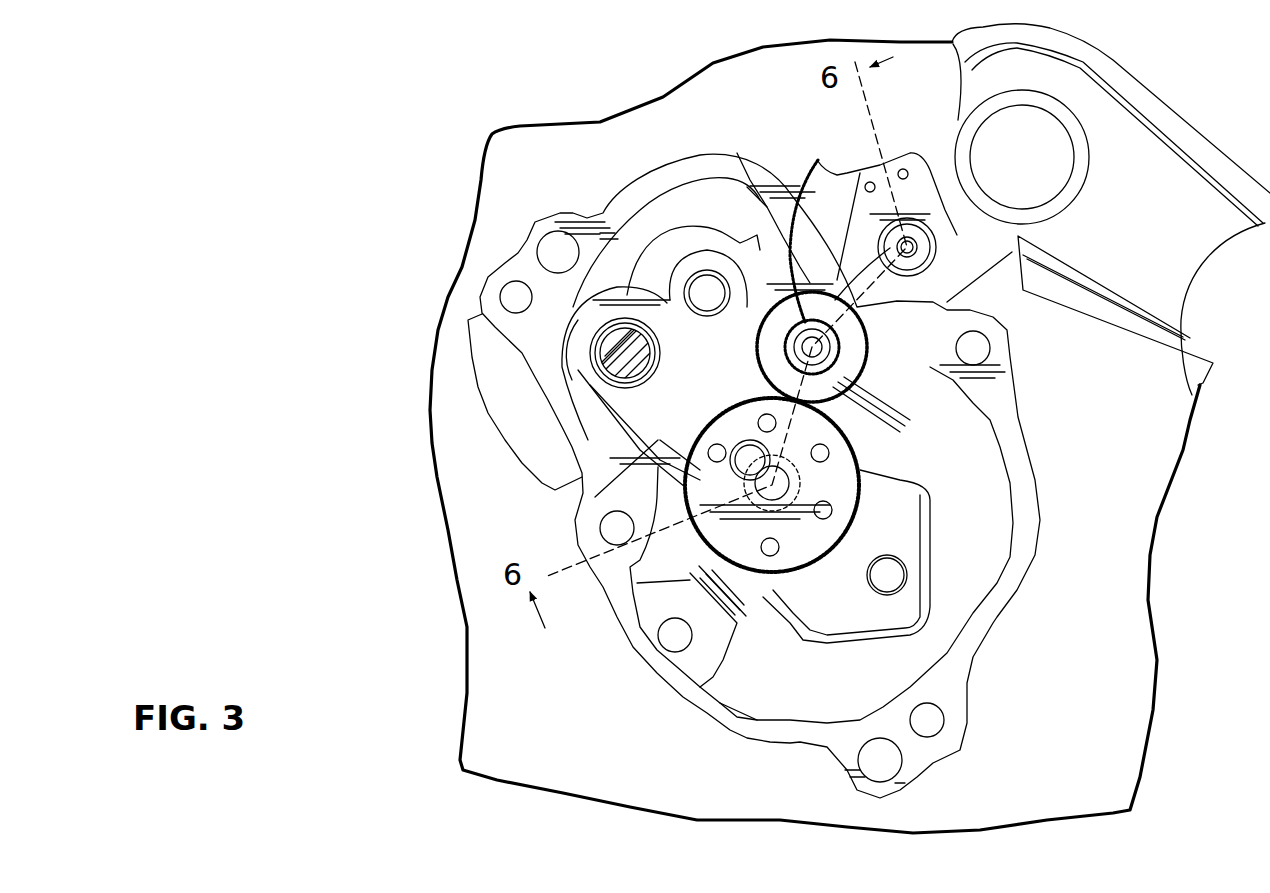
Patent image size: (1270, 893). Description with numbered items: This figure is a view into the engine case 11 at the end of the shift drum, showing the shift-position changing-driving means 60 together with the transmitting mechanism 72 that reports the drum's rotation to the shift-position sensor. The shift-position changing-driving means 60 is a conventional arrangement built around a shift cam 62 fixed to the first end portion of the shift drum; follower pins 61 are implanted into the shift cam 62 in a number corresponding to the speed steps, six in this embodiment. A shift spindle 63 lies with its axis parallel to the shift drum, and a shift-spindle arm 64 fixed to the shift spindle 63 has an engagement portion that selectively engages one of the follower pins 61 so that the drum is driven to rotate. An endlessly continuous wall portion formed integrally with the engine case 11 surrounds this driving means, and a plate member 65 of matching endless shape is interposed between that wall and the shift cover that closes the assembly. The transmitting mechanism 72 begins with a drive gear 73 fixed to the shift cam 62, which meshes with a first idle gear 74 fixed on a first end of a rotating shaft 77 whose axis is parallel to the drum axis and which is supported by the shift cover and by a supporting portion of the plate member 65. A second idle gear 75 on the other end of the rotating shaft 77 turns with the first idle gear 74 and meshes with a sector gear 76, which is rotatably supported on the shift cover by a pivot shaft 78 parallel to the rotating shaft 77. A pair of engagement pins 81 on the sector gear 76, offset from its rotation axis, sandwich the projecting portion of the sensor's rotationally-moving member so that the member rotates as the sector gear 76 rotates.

The engine case 11 is at (1117, 493).
The shift-position changing-driving means 60 is at (940, 547).
The follower pins 61 is at (880, 448).
The shift cam 62 is at (815, 545).
The shift spindle 63 is at (607, 373).
The shift-spindle arm 64 is at (583, 497).
The plate member 65 is at (740, 718).
The transmitting mechanism 72 is at (868, 378).
The drive gear 73 is at (660, 440).
The first idle gear 74 is at (962, 298).
The second idle gear 75 is at (785, 348).
The sector gear 76 is at (750, 190).
The rotating shaft 77 is at (822, 330).
The pivot shaft 78 is at (915, 238).
The engagement pins 81 is at (903, 169).